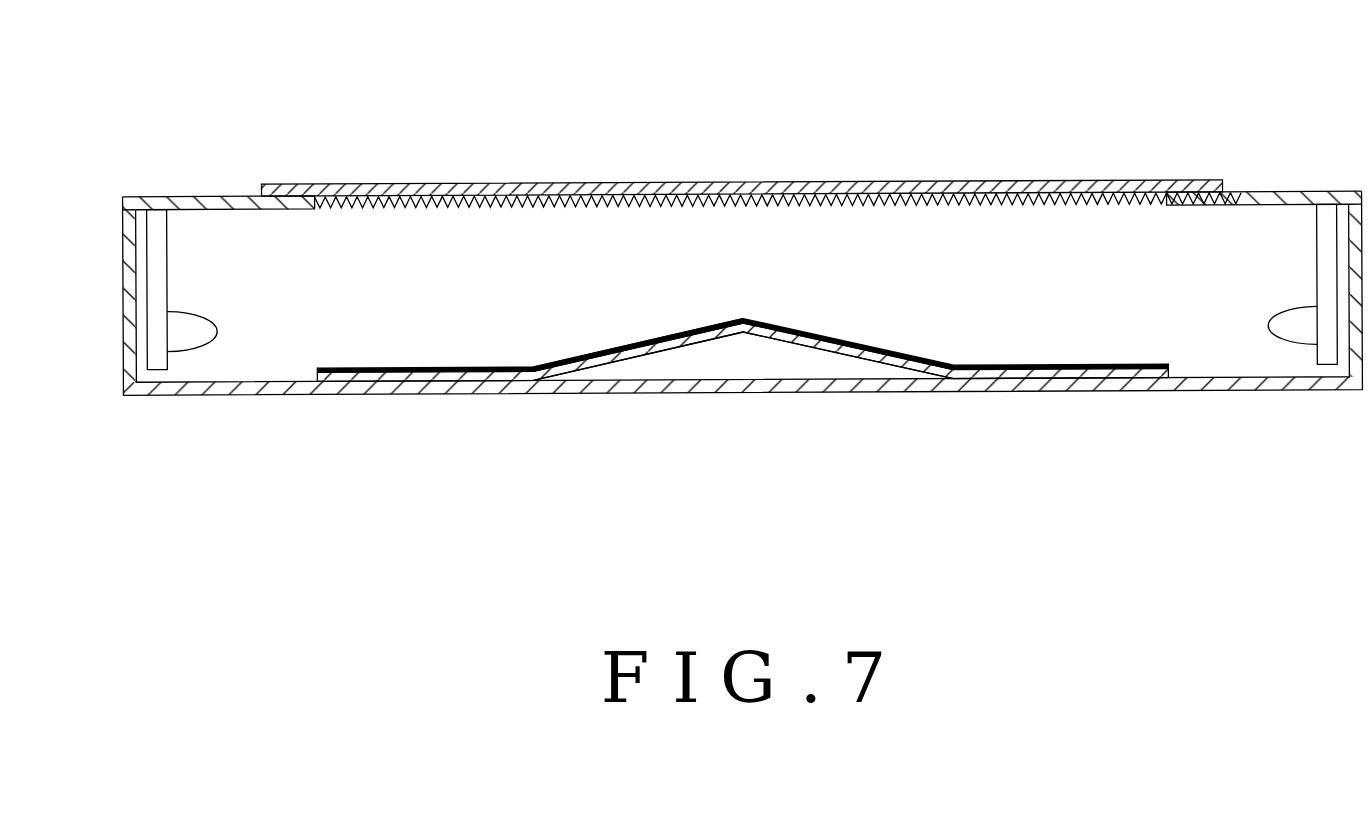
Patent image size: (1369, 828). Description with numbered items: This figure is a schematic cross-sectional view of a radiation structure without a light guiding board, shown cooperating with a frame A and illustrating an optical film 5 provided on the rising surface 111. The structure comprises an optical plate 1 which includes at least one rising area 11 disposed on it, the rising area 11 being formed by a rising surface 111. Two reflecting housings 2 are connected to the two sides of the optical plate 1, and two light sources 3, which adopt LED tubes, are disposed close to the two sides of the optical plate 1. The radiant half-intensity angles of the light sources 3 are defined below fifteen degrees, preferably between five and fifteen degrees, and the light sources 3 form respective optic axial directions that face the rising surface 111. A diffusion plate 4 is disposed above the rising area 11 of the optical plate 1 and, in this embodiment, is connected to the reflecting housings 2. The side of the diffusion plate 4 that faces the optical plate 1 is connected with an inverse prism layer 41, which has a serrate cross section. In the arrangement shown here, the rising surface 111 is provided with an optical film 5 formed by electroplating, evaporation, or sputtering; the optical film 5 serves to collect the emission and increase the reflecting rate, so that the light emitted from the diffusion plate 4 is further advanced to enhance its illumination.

The frame A is at (132, 357).
The optical plate 1 is at (423, 372).
The rising area 11 is at (657, 342).
The rising surface 111 is at (683, 325).
The reflecting housing 2 is at (231, 197).
The light source 3 is at (183, 325).
The diffusion plate 4 is at (597, 188).
The inverse prism layer 41 is at (997, 181).
The optical film 5 is at (821, 327).